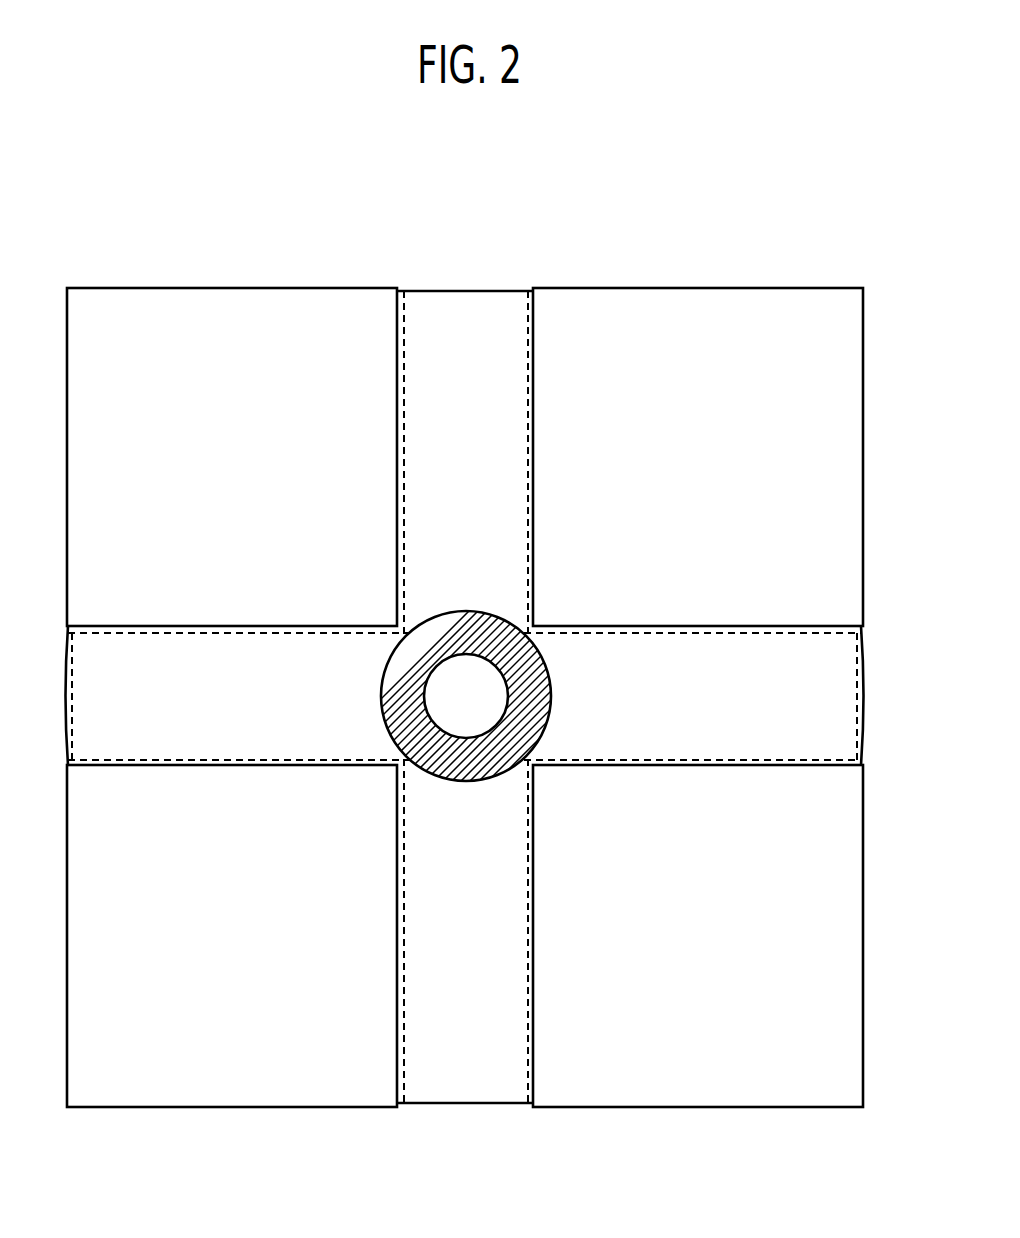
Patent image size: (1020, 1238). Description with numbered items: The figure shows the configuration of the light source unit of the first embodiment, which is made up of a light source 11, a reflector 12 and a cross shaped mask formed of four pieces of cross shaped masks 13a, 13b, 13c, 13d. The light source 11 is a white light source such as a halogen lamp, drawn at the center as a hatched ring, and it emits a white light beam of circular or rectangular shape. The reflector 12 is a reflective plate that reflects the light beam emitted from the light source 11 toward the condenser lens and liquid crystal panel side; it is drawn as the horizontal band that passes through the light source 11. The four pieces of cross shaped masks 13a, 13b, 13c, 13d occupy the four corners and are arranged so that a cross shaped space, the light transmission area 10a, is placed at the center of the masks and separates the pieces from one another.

The light transmission area 10a is at (466, 289).
The light source 11 is at (553, 688).
The reflector 12 is at (840, 690).
The piece of cross shaped mask 13a is at (243, 315).
The piece of cross shaped mask 13b is at (727, 315).
The piece of cross shaped mask 13c is at (760, 1084).
The piece of cross shaped mask 13d is at (236, 1084).